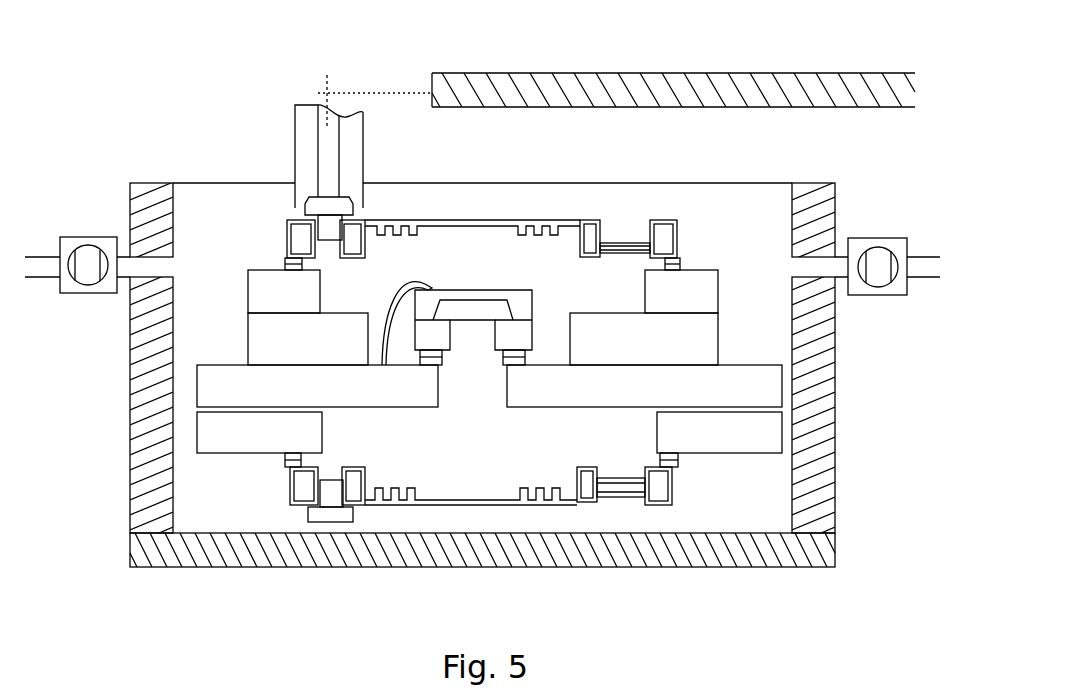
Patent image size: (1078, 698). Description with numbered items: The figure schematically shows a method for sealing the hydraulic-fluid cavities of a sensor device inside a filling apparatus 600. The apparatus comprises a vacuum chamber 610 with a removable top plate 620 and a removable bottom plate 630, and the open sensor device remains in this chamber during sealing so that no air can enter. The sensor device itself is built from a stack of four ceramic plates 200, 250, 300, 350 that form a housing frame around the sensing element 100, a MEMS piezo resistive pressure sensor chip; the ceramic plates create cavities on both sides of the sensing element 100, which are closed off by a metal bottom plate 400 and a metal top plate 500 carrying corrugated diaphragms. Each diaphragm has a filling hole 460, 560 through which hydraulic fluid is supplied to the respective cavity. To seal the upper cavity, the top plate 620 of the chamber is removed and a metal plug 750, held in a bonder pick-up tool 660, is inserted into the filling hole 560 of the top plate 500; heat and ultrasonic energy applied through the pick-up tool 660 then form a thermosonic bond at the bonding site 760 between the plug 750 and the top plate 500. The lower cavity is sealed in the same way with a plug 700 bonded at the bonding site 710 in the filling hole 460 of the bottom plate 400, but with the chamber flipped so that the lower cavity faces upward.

The sensing element 100 is at (473, 327).
The ceramic plate 200 is at (489, 386).
The ceramic plate 250 is at (489, 439).
The ceramic plate 300 is at (483, 339).
The ceramic plate 350 is at (483, 291).
The metal bottom plate 400 is at (300, 482).
The filling hole 460 is at (328, 476).
The metal top plate 500 is at (295, 240).
The filling hole 560 is at (327, 252).
The filling apparatus 600 is at (461, 358).
The vacuum chamber 610 is at (825, 363).
The removable top plate 620 is at (760, 90).
The removable bottom plate 630 is at (812, 548).
The bonder pick-up tool 660 is at (312, 148).
The plug 700 is at (346, 557).
The bonding site 710 is at (347, 508).
The metal plug 750 is at (332, 215).
The bonding site 760 is at (363, 216).